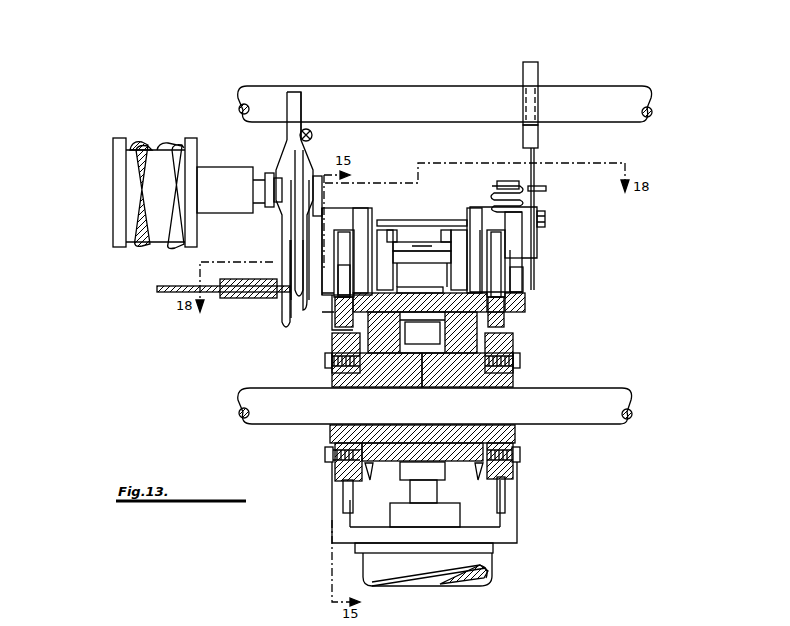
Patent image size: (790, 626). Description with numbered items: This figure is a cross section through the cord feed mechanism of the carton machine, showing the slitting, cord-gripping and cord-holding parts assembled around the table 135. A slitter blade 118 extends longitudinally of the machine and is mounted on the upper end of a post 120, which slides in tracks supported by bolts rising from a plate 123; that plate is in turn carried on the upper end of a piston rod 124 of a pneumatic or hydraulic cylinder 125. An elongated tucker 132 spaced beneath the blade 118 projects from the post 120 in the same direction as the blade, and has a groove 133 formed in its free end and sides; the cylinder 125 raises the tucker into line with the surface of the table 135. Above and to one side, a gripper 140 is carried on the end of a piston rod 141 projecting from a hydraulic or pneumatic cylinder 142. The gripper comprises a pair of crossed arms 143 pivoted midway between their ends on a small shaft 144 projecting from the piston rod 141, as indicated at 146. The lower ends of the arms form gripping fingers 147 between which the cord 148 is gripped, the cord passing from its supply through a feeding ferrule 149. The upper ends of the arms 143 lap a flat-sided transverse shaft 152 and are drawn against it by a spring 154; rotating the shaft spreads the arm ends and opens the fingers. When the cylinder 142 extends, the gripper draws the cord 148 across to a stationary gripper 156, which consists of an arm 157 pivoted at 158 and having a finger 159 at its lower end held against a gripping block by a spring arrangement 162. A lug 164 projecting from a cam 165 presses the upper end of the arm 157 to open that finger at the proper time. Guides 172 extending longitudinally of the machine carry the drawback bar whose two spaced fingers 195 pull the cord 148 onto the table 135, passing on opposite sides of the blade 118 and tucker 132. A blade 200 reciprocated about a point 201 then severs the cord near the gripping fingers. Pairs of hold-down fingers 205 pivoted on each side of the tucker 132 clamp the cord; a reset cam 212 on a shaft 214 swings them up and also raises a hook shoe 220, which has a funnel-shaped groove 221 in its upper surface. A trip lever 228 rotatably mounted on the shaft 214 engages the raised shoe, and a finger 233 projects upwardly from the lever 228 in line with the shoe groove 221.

The slitter blade 118 is at (420, 300).
The post 120 is at (418, 340).
The plate 123 is at (348, 486).
The piston rod 124 is at (395, 515).
The pneumatic or hydraulic cylinder 125 is at (393, 573).
The tucker 132 is at (372, 370).
The groove 133 is at (445, 370).
The table 135 is at (525, 302).
The gripper 140 is at (296, 108).
The piston rod 141 is at (226, 174).
The hydraulic or pneumatic cylinder 142 is at (118, 200).
The crossed arms 143 is at (283, 170).
The small shaft 144 is at (262, 210).
The pivotal mounting 146 is at (272, 210).
The gripping fingers 147 is at (296, 300).
The cord 148 is at (176, 284).
The feeding ferrule 149 is at (232, 297).
The transverse shaft 152 is at (397, 92).
The spring 154 is at (318, 130).
The stationary gripper 156 is at (526, 198).
The arm 157 is at (528, 240).
The pivot 158 is at (546, 218).
The finger 159 is at (518, 282).
The spring arrangement 162 is at (538, 165).
The lug 164 is at (540, 140).
The cam 165 is at (534, 68).
The guides 172 is at (360, 210).
The fingers 195 is at (392, 240).
The blade 200 is at (320, 310).
The point 201 is at (325, 318).
The hold-down fingers 205 is at (490, 250).
The reset cam 212 is at (330, 340).
The shaft 214 is at (585, 392).
The hook shoe 220 is at (505, 325).
The funnel-shaped groove 221 is at (505, 312).
The trip lever 228 is at (505, 498).
The finger 233 is at (497, 272).